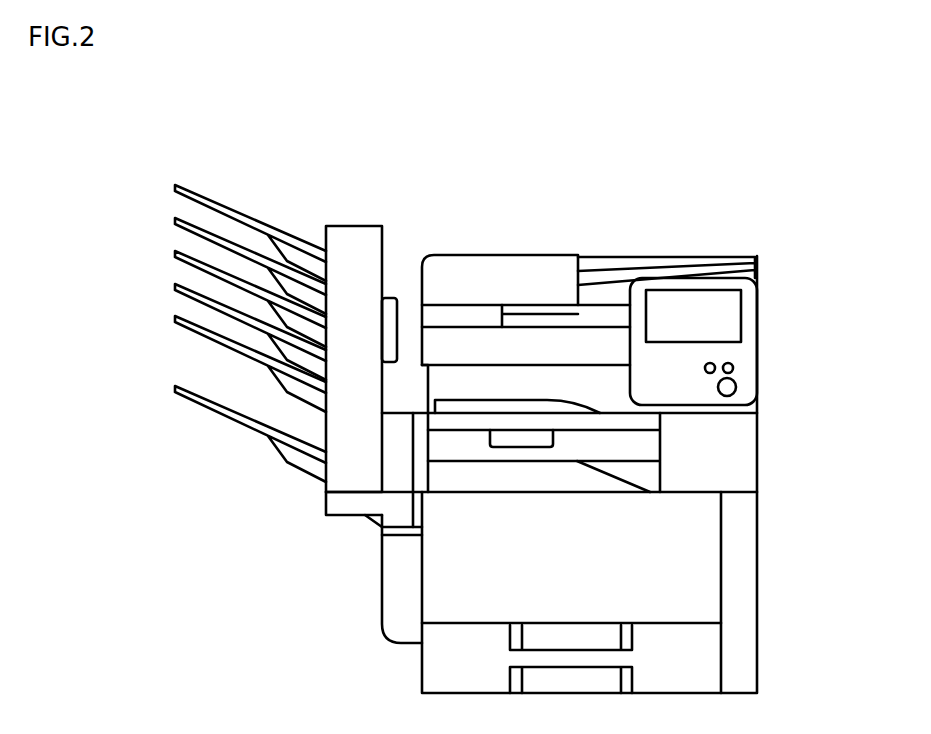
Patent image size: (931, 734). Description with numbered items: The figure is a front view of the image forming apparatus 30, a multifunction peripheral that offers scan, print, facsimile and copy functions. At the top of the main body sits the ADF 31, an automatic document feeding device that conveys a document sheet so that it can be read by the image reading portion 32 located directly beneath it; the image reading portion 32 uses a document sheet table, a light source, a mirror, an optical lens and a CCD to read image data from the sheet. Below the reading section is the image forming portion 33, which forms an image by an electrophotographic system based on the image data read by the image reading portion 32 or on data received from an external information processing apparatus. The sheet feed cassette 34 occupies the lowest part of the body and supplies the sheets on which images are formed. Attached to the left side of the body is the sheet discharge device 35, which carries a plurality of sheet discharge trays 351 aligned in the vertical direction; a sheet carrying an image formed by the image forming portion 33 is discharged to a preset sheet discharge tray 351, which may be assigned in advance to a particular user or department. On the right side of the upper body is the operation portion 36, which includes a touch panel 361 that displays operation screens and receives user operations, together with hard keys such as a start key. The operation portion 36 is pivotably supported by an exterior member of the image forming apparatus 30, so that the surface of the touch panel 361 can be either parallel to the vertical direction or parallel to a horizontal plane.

The image forming apparatus 30 is at (752, 208).
The ADF 31 is at (515, 256).
The image reading portion 32 is at (458, 345).
The image forming portion 33 is at (721, 556).
The sheet feed cassette 34 is at (721, 656).
The sheet discharge device 35 is at (347, 226).
The sheet discharge trays 351 is at (177, 223).
The operation portion 36 is at (703, 405).
The touch panel 361 is at (716, 315).